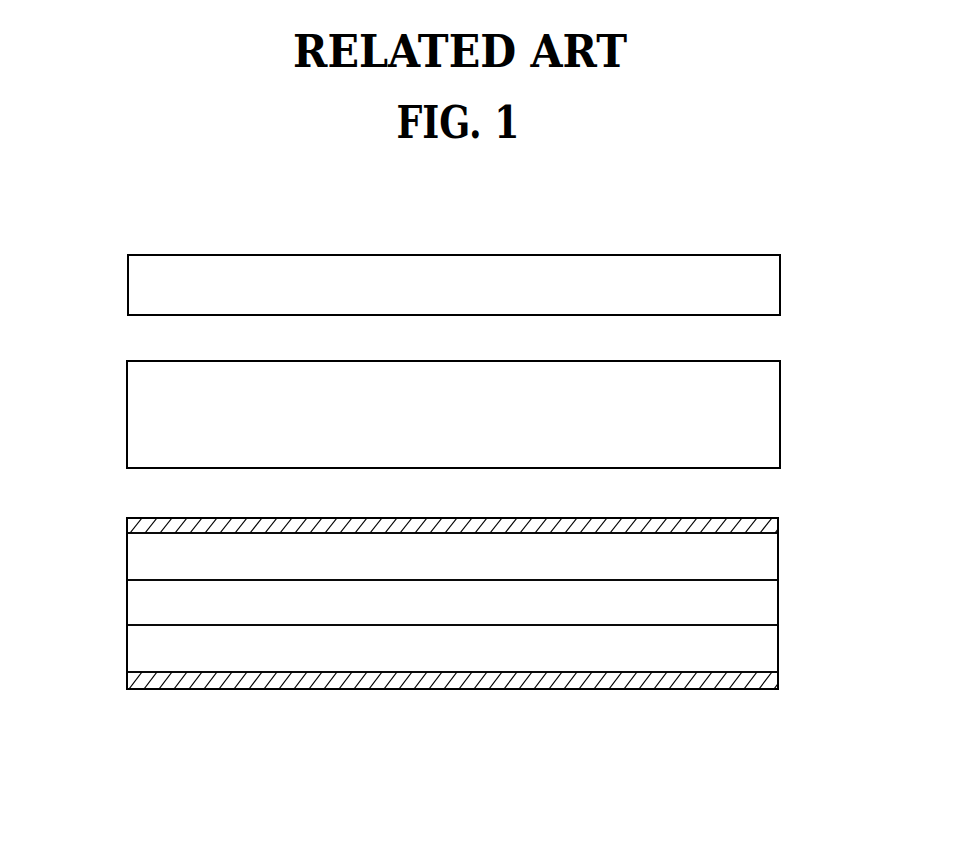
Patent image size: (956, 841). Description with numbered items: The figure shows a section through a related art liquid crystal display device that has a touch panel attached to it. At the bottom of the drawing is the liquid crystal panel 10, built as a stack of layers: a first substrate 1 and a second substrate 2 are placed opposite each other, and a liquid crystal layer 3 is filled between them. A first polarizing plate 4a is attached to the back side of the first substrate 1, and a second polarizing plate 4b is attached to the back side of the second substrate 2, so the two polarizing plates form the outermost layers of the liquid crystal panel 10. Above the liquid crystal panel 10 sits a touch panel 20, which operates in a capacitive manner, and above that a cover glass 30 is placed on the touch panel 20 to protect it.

The cover glass 30 is at (128, 285).
The touch panel 20 is at (128, 413).
The liquid crystal panel 10 is at (793, 518).
The second polarizing plate 4b is at (128, 522).
The second substrate 2 is at (128, 558).
The liquid crystal layer 3 is at (130, 602).
The first substrate 1 is at (128, 646).
The first polarizing plate 4a is at (128, 680).